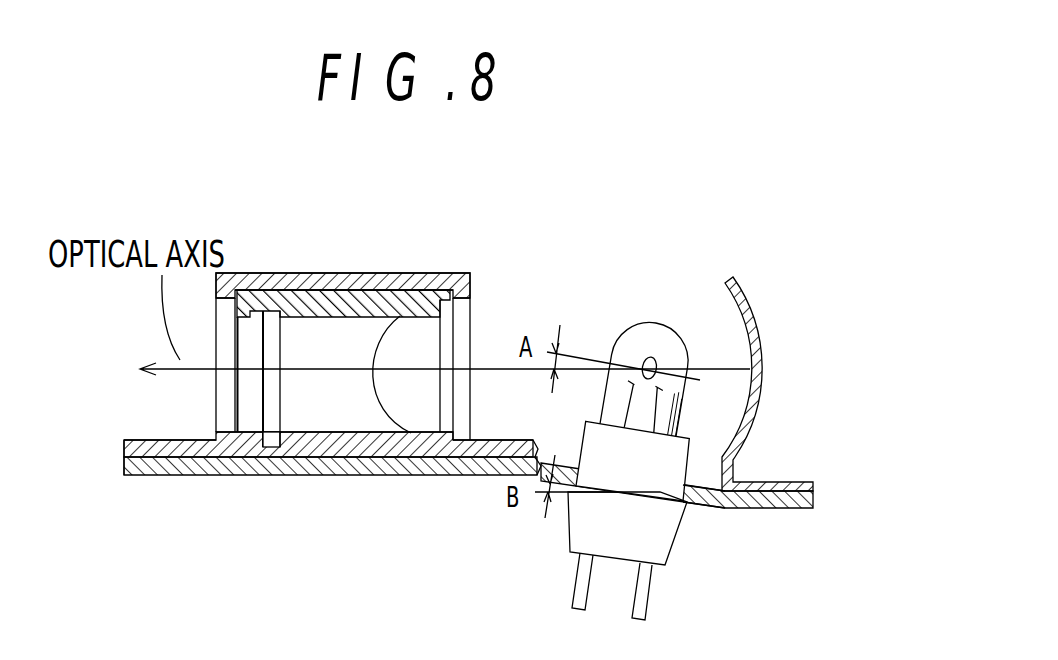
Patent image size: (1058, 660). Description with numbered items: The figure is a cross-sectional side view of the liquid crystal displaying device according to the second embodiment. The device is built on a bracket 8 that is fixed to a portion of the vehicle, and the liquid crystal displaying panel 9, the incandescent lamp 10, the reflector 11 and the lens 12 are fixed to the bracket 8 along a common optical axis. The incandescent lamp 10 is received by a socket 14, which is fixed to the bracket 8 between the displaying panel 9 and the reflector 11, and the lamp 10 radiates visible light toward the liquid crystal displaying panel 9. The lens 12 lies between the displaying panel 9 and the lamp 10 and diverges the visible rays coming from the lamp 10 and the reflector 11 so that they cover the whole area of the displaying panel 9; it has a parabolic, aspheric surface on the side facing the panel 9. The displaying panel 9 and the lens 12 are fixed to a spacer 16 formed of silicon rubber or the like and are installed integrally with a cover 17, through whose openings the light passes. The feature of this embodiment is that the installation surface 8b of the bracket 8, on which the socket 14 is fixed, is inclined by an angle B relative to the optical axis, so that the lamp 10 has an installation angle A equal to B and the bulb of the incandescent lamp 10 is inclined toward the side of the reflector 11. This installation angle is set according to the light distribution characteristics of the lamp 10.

The bracket 8 is at (800, 512).
The installation surface 8b is at (708, 510).
The liquid crystal displaying panel 9 is at (263, 342).
The incandescent lamp 10 is at (631, 323).
The reflector 11 is at (755, 312).
The lens 12 is at (422, 340).
The socket 14 is at (680, 531).
The spacer 16 is at (313, 455).
The cover 17 is at (292, 290).